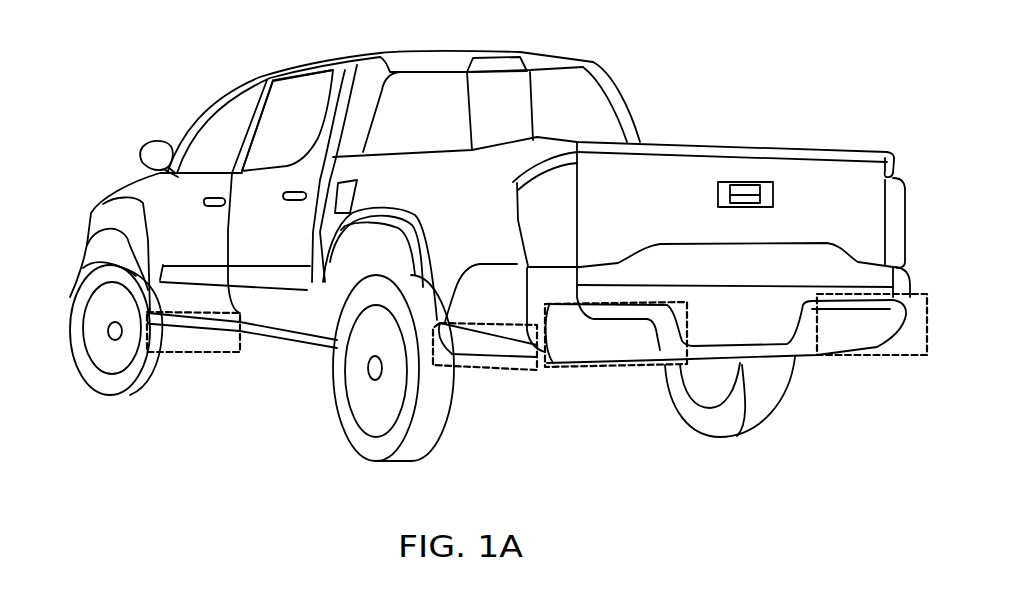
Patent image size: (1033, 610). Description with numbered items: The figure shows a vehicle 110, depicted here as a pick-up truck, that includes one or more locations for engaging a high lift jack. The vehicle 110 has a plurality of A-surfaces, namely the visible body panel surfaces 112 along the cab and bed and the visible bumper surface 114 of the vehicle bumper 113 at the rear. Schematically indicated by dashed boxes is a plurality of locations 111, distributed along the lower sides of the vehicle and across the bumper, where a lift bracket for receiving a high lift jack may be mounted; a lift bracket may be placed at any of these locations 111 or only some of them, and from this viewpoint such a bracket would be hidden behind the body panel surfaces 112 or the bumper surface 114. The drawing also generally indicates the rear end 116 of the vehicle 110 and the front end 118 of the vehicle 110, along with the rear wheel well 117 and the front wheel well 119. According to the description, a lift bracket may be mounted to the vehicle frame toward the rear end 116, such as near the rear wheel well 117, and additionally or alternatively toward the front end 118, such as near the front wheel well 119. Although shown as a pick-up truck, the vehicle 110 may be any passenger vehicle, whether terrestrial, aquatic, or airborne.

The vehicle 110 is at (120, 130).
The locations 111 is at (205, 358).
The body panel surface 112 is at (485, 160).
The vehicle bumper 113 is at (810, 380).
The bumper surface 114 is at (660, 354).
The rear end 116 is at (937, 322).
The rear wheel well 117 is at (360, 263).
The front end 118 is at (80, 220).
The front wheel well 119 is at (97, 259).